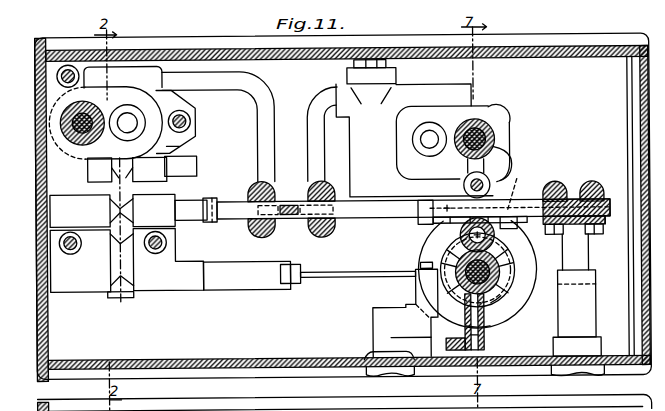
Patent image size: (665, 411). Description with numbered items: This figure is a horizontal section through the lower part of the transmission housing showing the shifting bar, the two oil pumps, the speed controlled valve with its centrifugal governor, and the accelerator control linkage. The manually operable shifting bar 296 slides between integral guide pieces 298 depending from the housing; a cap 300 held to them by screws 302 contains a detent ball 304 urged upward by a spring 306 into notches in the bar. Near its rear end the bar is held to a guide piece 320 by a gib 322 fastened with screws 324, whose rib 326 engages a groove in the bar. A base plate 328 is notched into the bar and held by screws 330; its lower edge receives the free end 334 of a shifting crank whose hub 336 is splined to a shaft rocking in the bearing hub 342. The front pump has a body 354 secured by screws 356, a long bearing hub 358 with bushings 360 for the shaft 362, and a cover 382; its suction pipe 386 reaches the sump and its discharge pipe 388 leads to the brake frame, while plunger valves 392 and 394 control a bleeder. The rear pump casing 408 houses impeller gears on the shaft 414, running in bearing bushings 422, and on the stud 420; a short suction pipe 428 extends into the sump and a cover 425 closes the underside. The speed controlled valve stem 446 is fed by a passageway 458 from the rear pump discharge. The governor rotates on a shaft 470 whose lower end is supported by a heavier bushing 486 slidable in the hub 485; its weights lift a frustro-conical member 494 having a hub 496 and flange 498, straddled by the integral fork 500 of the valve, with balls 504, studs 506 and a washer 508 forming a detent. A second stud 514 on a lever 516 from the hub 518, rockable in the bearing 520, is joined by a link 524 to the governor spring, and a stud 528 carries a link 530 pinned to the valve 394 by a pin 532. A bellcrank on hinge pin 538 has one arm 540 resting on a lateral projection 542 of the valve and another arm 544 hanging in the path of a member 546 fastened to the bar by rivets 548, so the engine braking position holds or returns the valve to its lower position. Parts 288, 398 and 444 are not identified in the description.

The housing 288 is at (56, 329).
The manually operable shifting bar 296 is at (229, 213).
The integral guide pieces 298 is at (275, 198).
The cap 300 is at (333, 234).
The screws 302 is at (333, 226).
The detent ball 304 is at (300, 224).
The spring 306 is at (283, 220).
The guide piece 320 is at (574, 198).
The gib 322 is at (552, 189).
The screws 324 is at (600, 187).
The rib 326 is at (547, 206).
The base plate 328 is at (603, 223).
The screws 330 is at (599, 237).
The free end of shifting crank 334 is at (581, 229).
The hub of the crank 336 is at (593, 300).
The bearing hub 342 is at (595, 348).
The body 354 is at (160, 108).
The screws 356 is at (190, 116).
The long bearing hub 358 is at (90, 114).
The bushings 360 is at (118, 131).
The shaft 362 is at (83, 136).
The cover 382 is at (168, 147).
The suction pipe 386 is at (258, 137).
The discharge pipe 388 is at (198, 168).
The plunger valve 392 is at (193, 219).
The plunger valve 394 is at (228, 273).
The coupling 398 is at (214, 222).
The rear pump casing 408 is at (511, 141).
The shaft 414 is at (496, 133).
The stud 420 is at (432, 132).
The bearing bushings 422 is at (481, 127).
The cover 425 is at (511, 113).
The short suction pipe 428 is at (309, 143).
The nut 444 is at (389, 65).
The valve stem 446 is at (494, 238).
The passageway 458 is at (509, 158).
The shaft 470 is at (500, 273).
The hub 485 is at (506, 252).
The heavier bushing 486 is at (506, 262).
The frustro-conical member 494 is at (529, 300).
The hub 496 is at (489, 322).
The flange 498 is at (507, 281).
The integral fork 500 is at (500, 297).
The balls 504 is at (445, 261).
The studs 506 is at (461, 236).
The washer 508 is at (447, 254).
The second stud 514 is at (433, 318).
The lever 516 is at (445, 331).
The hub 518 is at (388, 327).
The bearing 520 is at (400, 371).
The link 524 is at (487, 341).
The stud 528 is at (420, 265).
The link 530 is at (379, 278).
The pin 532 is at (290, 283).
The hinge pin 538 is at (521, 188).
The arm 540 is at (490, 189).
The lateral projection 542 is at (466, 188).
The arm 544 is at (532, 225).
The member 546 is at (448, 208).
The rivets 548 is at (420, 208).